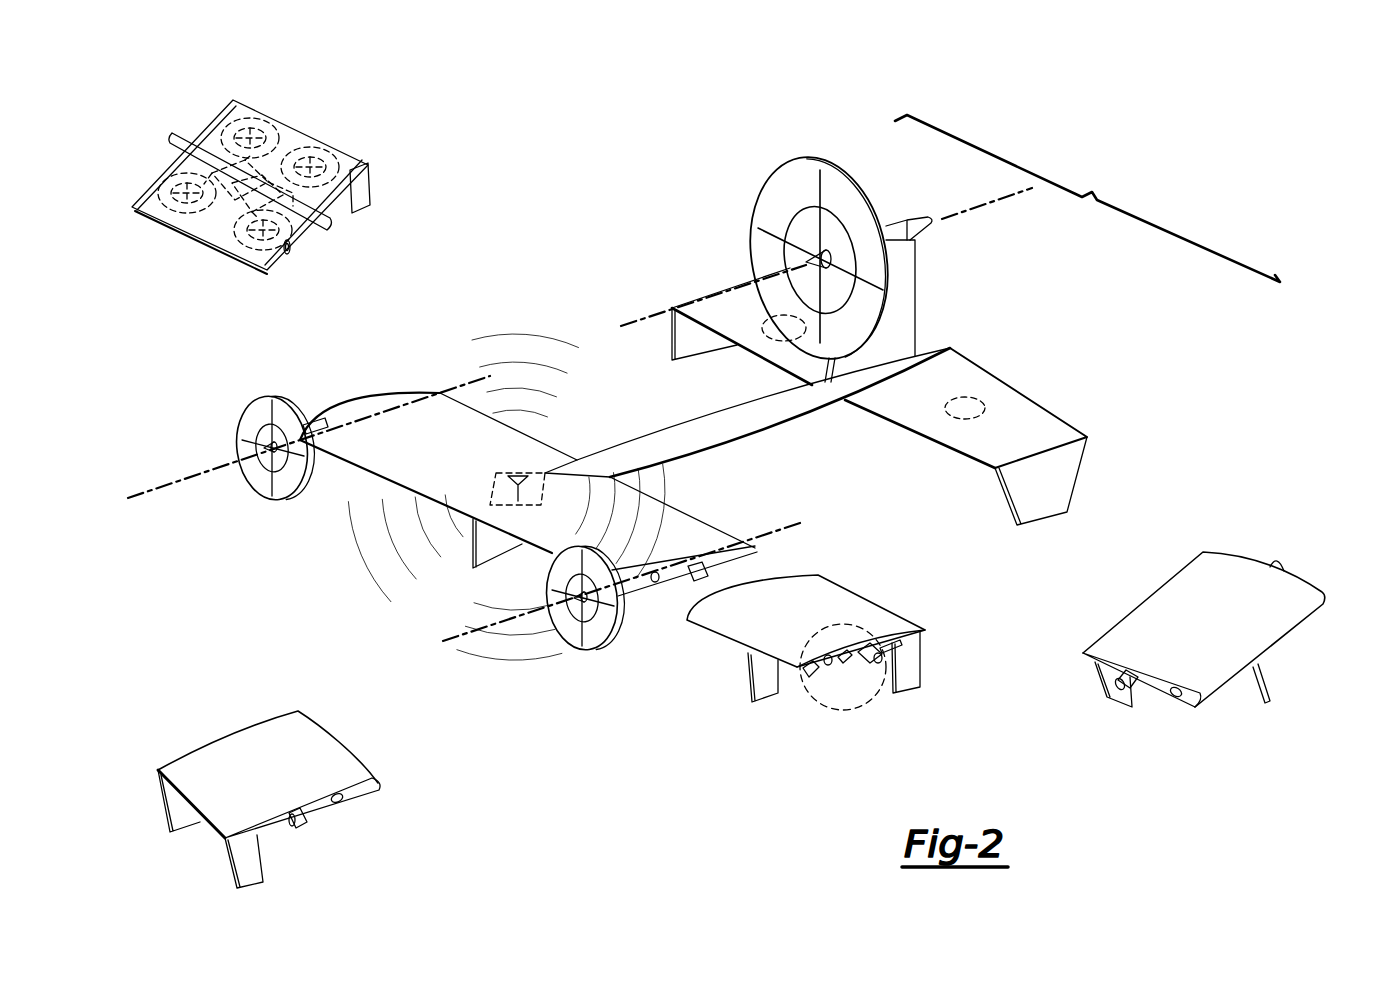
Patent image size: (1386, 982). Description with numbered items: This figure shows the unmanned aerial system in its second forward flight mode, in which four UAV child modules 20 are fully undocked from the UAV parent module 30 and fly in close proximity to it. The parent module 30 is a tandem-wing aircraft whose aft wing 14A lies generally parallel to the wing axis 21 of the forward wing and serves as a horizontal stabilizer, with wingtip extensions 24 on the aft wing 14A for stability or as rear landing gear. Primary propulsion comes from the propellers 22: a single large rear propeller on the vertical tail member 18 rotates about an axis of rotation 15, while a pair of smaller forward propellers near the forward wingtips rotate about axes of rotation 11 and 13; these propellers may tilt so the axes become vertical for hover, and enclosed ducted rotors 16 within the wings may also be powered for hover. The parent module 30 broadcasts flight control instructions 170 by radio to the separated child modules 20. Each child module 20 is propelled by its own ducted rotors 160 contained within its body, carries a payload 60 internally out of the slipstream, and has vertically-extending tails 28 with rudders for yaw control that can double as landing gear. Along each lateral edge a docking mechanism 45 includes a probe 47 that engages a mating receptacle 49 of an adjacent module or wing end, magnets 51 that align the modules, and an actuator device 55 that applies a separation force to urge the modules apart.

The axis of rotation 11 is at (143, 492).
The axis of rotation 13 is at (450, 634).
The aft wing 14A is at (1013, 400).
The axis of rotation 15 is at (632, 320).
The ducted fans or rotors 16 is at (768, 316).
The vertical tail member 18 is at (915, 301).
The UAV child module 20 is at (734, 468).
The wing axis 21 is at (785, 187).
The propeller 22 is at (255, 420).
The wingtip extension 24 is at (1080, 470).
The vertically-extending tail 28 is at (370, 190).
The UAV parent module 30 is at (1087, 198).
The docking mechanism 45 is at (822, 707).
The probe 47 is at (865, 665).
The receptacle 49 is at (830, 672).
The magnets 51 is at (880, 637).
The actuator device 55 is at (847, 647).
The payload 60 is at (220, 196).
The ducted fans or rotors 160 is at (318, 147).
The flight control instructions 170 is at (522, 334).